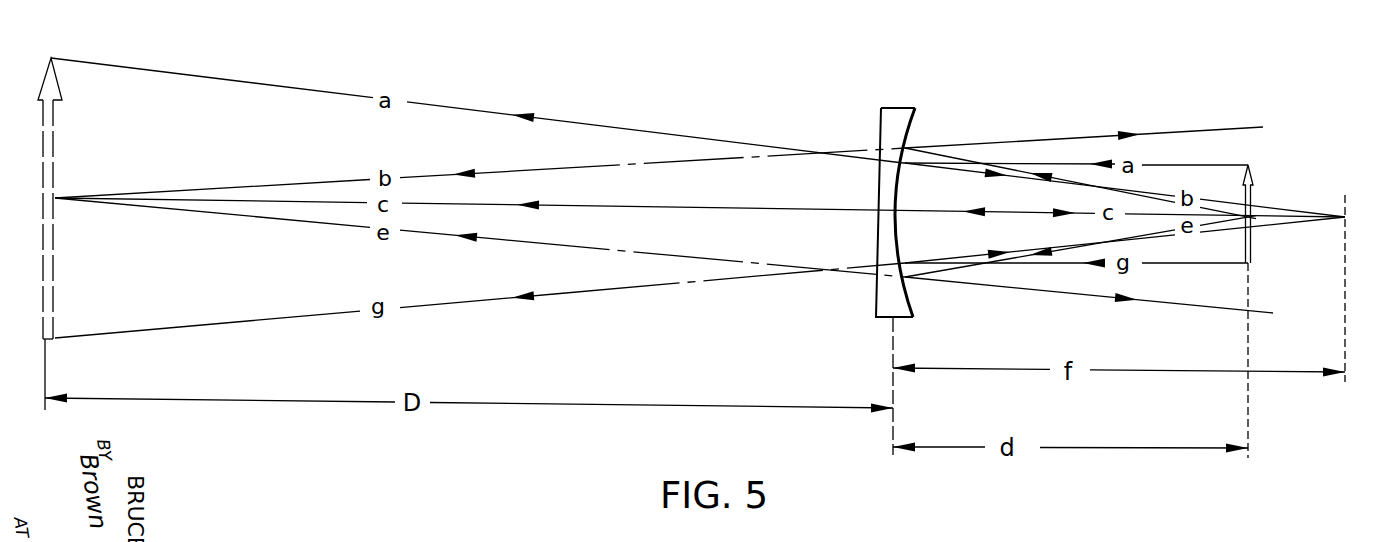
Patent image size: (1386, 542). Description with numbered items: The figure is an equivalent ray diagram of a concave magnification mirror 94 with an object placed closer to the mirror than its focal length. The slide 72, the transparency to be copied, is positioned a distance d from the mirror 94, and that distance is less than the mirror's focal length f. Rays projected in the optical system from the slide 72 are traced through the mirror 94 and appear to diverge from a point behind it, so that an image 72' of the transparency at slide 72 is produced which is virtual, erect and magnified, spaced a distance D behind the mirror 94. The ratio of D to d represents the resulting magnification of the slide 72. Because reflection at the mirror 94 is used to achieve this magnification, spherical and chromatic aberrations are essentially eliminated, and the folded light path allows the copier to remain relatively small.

The virtual image 72' is at (72, 179).
The magnification mirror 94 is at (903, 116).
The slide 72 is at (1288, 195).